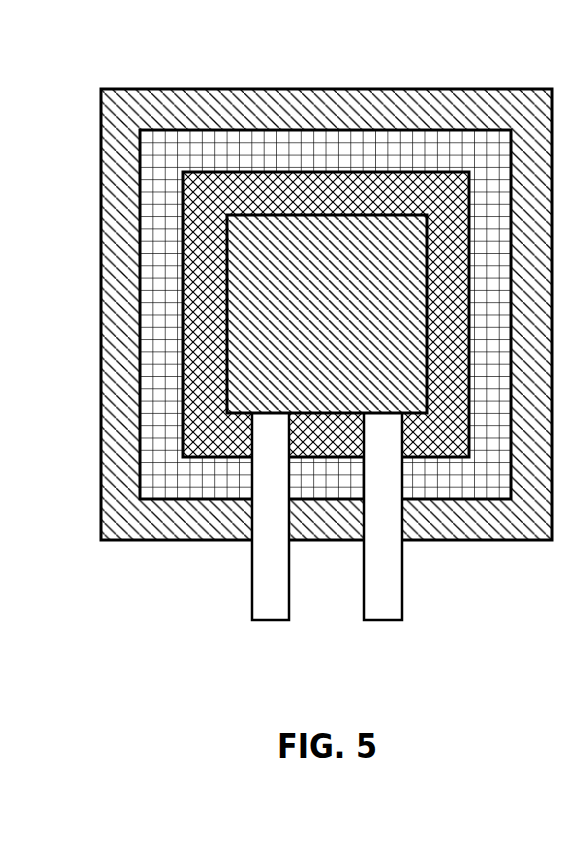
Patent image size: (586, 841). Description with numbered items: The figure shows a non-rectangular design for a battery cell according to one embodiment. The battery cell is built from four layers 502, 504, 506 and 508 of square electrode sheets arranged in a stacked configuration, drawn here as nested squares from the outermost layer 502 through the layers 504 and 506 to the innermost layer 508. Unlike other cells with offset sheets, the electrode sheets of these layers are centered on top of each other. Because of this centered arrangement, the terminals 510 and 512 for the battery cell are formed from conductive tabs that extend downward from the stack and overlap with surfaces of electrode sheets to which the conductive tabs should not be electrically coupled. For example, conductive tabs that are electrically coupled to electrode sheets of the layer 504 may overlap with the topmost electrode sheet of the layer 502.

The layer of square electrode sheets 502 is at (121, 165).
The layer of square electrode sheets 504 is at (173, 220).
The layer of square electrode sheets 506 is at (200, 300).
The layer of square electrode sheets 508 is at (252, 372).
The terminal 510 is at (280, 595).
The terminal 512 is at (377, 595).